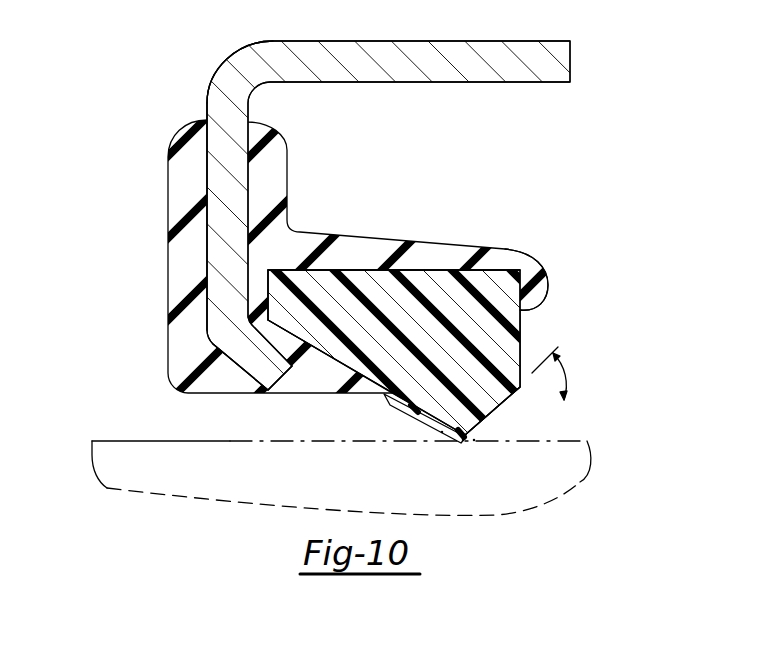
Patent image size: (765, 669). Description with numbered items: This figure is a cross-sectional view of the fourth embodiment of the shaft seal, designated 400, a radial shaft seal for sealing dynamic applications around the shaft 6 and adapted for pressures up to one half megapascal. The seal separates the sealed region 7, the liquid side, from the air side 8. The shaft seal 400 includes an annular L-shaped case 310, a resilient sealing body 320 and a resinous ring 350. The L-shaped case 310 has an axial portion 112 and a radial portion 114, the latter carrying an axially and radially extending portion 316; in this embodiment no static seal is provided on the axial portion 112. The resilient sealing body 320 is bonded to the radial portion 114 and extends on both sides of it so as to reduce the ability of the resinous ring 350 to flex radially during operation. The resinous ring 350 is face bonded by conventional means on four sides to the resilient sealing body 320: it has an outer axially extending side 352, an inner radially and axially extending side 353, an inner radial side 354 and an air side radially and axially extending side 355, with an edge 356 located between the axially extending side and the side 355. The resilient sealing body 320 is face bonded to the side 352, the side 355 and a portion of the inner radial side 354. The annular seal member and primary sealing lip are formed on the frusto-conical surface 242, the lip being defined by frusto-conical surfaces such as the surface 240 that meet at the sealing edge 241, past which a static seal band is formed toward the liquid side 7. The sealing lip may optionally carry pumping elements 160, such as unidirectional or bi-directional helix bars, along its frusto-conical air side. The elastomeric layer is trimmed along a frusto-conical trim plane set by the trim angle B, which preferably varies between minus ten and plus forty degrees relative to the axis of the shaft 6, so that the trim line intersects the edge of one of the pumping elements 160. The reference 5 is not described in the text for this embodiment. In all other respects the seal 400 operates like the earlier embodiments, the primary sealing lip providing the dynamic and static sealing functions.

The shaft 5 is at (140, 441).
The shaft 6 is at (92, 453).
The sealed region 7 is at (618, 123).
The air side 8 is at (67, 155).
The axial portion 112 is at (512, 41).
The radial portion 114 is at (208, 299).
The pumping elements 160 is at (383, 396).
The frustoconical surface 240 is at (442, 432).
The edge 241 is at (462, 440).
The frusto-conical surface 242 is at (474, 440).
The L-shaped case 310 is at (242, 50).
The axially and radially extending portion 316 is at (238, 370).
The resilient sealing body 320 is at (176, 206).
The resinous ring 350 is at (508, 343).
The outer axially extending side 352 is at (352, 270).
The inner radially and axially extending side 353 is at (507, 400).
The inner radial side 354 is at (520, 323).
The air side radially and axially extending side 355 is at (315, 372).
The edge 356 is at (268, 288).
The shaft seal 400 is at (608, 188).
The trim angle B is at (567, 373).